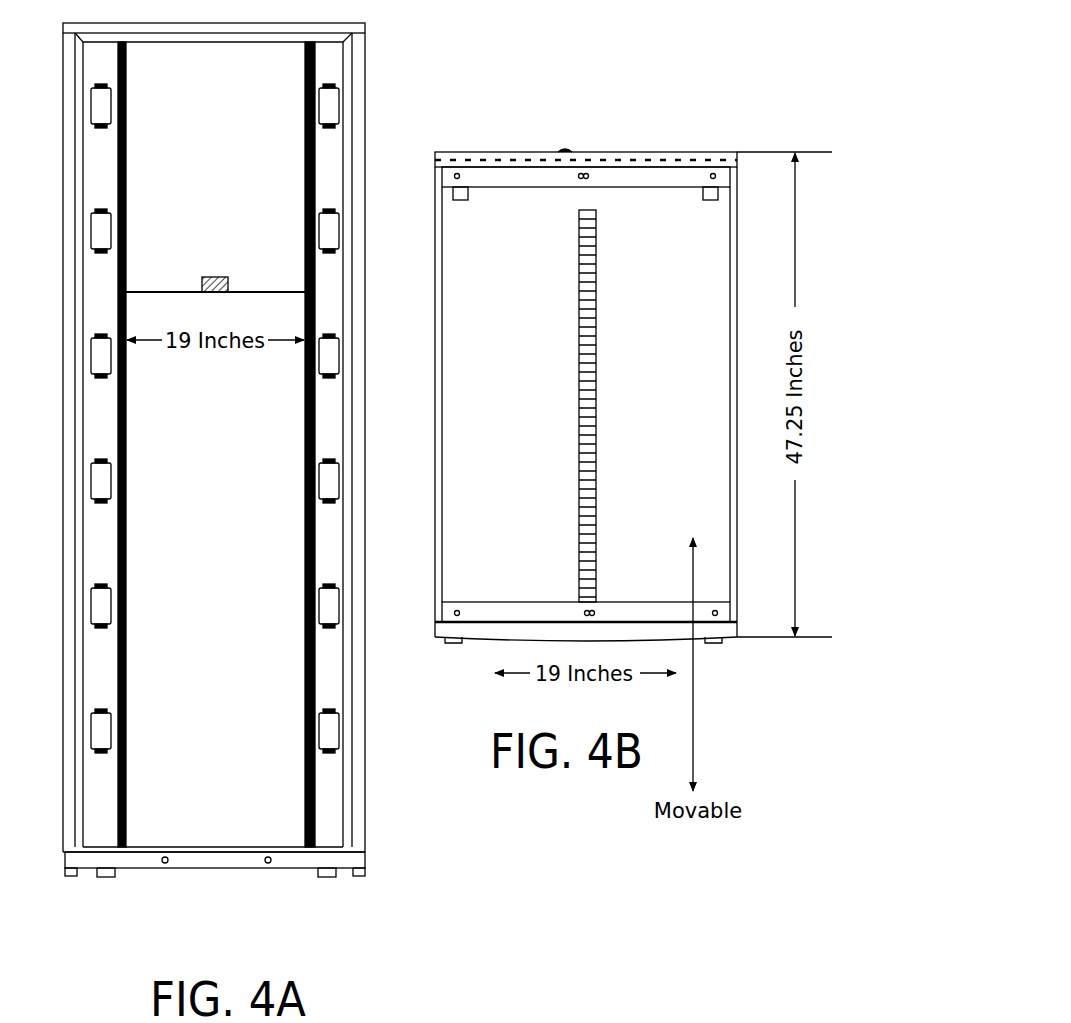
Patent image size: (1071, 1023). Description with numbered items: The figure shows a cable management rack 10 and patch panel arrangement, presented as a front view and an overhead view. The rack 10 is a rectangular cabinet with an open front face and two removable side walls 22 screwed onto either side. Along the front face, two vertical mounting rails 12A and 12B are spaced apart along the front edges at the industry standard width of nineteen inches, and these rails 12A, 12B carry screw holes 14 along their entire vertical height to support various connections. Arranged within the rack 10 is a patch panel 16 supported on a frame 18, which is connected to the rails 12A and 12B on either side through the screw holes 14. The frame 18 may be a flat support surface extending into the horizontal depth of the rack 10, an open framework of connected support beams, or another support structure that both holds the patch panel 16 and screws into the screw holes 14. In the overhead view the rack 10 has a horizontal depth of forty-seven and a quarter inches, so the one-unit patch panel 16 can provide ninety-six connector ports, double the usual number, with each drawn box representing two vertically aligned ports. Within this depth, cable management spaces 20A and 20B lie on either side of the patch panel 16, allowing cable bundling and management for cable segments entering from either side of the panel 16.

In FIG. 4A, the cable management rack 10 is at (362, 80).
In FIG. 4B, the cable management rack 10 is at (548, 153).
In FIG. 4A, the vertical mounting rail 12A is at (125, 160).
In FIG. 4A, the vertical mounting rail 12B is at (305, 193).
In FIG. 4A, the screw holes 14 is at (133, 430).
In FIG. 4A, the patch panel 16 is at (212, 278).
In FIG. 4B, the patch panel 16 is at (579, 246).
In FIG. 4A, the frame 18 is at (278, 292).
In FIG. 4B, the cable management space 20A is at (665, 313).
In FIG. 4B, the cable management space 20B is at (508, 412).
In FIG. 4B, the side walls 22 is at (442, 325).